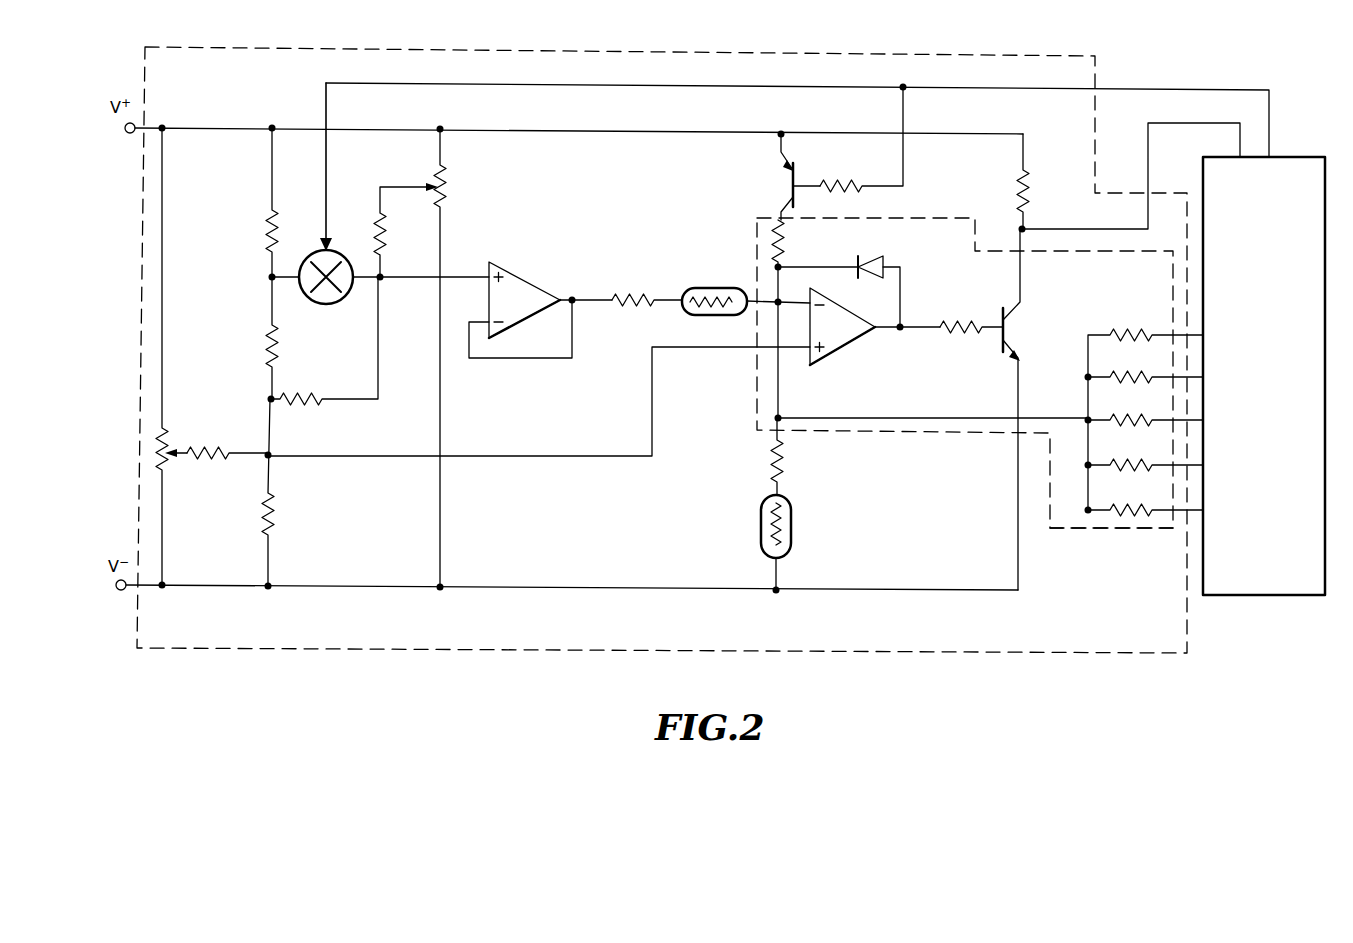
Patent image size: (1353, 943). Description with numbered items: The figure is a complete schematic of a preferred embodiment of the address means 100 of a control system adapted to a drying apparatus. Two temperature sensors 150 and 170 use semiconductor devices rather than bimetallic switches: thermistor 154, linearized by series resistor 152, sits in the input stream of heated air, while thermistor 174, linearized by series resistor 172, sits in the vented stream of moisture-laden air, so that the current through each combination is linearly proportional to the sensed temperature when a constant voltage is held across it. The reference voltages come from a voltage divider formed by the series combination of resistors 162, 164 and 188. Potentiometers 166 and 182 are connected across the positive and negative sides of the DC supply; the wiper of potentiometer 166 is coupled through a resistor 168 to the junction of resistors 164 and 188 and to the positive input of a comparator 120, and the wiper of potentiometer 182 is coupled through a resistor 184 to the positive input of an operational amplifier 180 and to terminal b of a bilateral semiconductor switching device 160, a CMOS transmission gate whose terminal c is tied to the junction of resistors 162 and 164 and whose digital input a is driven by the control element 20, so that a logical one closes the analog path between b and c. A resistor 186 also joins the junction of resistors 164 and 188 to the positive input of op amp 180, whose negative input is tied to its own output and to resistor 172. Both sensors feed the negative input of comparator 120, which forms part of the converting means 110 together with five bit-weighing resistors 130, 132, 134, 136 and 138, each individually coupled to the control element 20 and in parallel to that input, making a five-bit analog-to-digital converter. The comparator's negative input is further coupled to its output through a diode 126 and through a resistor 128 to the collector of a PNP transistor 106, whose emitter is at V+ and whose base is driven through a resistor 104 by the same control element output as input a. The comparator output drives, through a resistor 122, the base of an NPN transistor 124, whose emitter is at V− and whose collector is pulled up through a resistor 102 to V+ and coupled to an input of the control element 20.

The address means 100 is at (1097, 80).
The temperature sensor 170 is at (639, 243).
The converting means 110 is at (1098, 538).
The potentiometer 166 is at (151, 449).
The resistor 168 is at (226, 430).
The resistor 162 is at (268, 222).
The resistor 164 is at (267, 346).
The resistor 188 is at (270, 516).
The resistor 186 is at (305, 398).
The resistor 184 is at (379, 245).
The potentiometer 182 is at (453, 195).
The bilateral semiconductor switching device 160 is at (323, 305).
The operational amplifier 180 is at (528, 272).
The resistor 172 is at (616, 293).
The thermistor 174 is at (706, 290).
The bipolar semiconductor switching device 106 is at (790, 190).
The resistor 104 is at (825, 186).
The resistor 102 is at (1025, 204).
The resistor 128 is at (786, 245).
The diode 126 is at (889, 260).
The comparator 120 is at (839, 350).
The resistor 122 is at (959, 326).
The bipolar semiconductor switching device 124 is at (998, 348).
The resistor 130 is at (1124, 326).
The resistor 132 is at (1156, 374).
The resistor 134 is at (1122, 418).
The resistor 136 is at (1119, 463).
The resistor 138 is at (1119, 508).
The control element 20 is at (1246, 597).
The temperature sensor 150 is at (710, 507).
The resistor 152 is at (785, 467).
The thermistor 154 is at (790, 548).